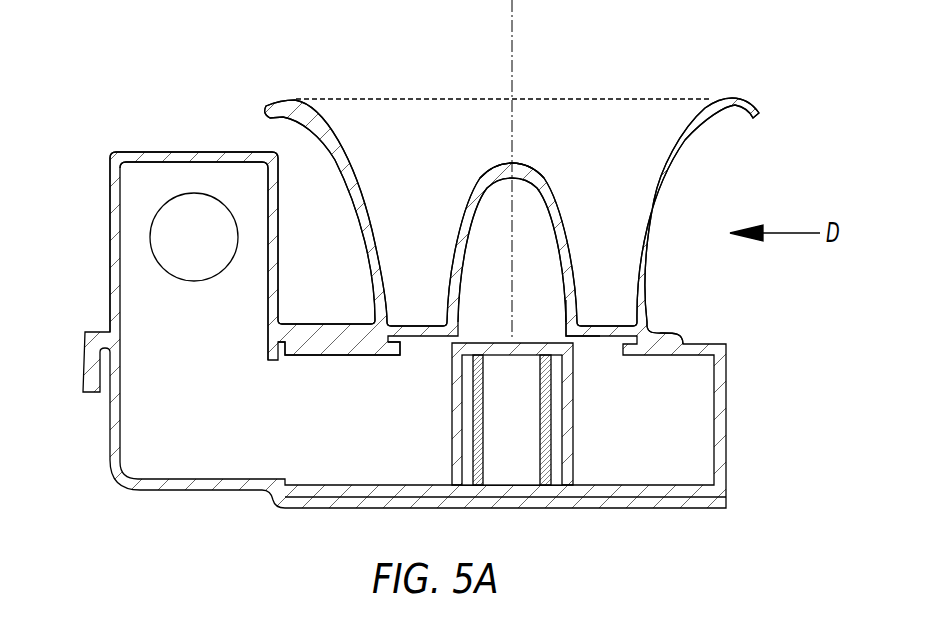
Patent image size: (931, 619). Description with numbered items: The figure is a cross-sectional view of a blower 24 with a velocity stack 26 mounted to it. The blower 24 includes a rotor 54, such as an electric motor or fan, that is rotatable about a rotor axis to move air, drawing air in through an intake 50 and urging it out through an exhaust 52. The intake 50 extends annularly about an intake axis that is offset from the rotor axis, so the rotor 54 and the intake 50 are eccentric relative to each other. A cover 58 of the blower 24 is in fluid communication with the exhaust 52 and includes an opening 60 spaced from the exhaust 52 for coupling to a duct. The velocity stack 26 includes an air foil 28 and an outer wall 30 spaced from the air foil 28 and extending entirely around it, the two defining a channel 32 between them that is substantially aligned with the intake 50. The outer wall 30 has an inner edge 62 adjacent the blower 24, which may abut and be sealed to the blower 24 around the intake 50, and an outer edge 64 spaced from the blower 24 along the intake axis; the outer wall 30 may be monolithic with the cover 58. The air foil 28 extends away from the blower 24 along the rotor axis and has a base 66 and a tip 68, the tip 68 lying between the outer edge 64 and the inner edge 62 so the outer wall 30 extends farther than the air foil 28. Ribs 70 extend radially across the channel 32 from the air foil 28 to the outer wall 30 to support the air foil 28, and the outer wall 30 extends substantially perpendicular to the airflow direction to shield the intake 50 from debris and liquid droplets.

The blower 24 is at (727, 397).
The velocity stack 26 is at (742, 92).
The air foil 28 is at (566, 237).
The outer wall 30 is at (686, 150).
The channel 32 is at (402, 132).
The intake 50 is at (421, 353).
The exhaust 52 is at (218, 338).
The rotor 54 is at (483, 415).
The cover 58 is at (107, 210).
The opening 60 is at (165, 212).
The inner edge 62 is at (664, 334).
The outer edge 64 is at (762, 112).
The base 66 is at (579, 324).
The tip 68 is at (513, 163).
The ribs 70 is at (413, 325).